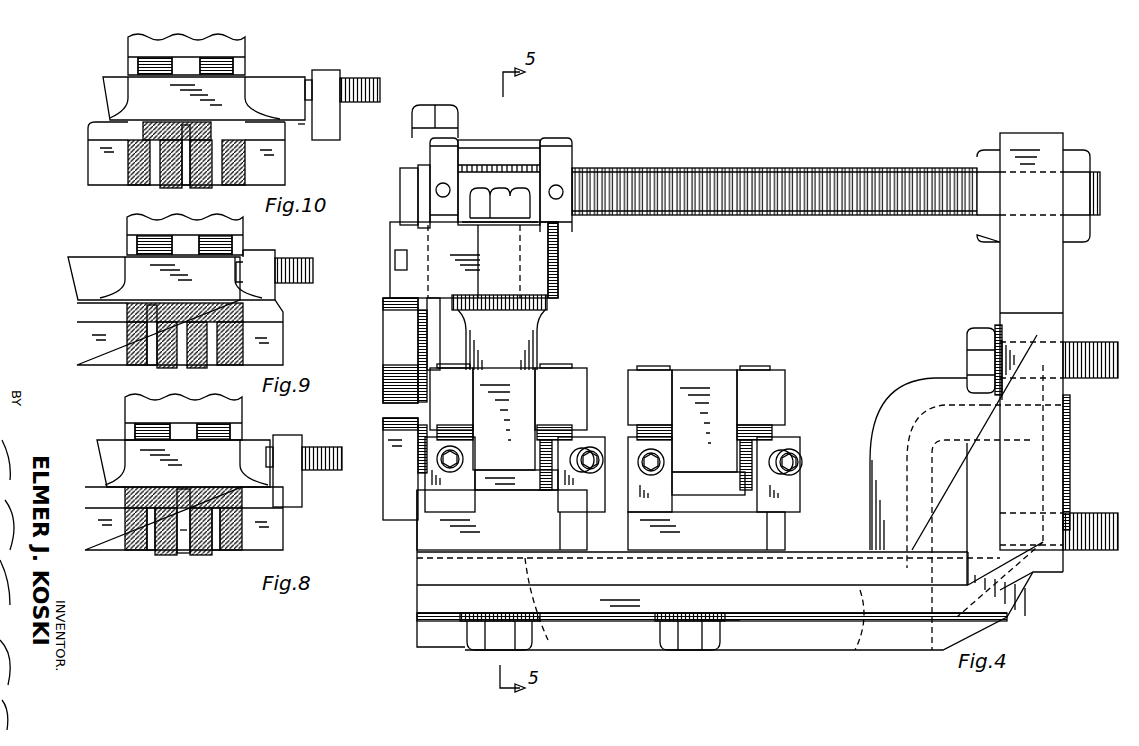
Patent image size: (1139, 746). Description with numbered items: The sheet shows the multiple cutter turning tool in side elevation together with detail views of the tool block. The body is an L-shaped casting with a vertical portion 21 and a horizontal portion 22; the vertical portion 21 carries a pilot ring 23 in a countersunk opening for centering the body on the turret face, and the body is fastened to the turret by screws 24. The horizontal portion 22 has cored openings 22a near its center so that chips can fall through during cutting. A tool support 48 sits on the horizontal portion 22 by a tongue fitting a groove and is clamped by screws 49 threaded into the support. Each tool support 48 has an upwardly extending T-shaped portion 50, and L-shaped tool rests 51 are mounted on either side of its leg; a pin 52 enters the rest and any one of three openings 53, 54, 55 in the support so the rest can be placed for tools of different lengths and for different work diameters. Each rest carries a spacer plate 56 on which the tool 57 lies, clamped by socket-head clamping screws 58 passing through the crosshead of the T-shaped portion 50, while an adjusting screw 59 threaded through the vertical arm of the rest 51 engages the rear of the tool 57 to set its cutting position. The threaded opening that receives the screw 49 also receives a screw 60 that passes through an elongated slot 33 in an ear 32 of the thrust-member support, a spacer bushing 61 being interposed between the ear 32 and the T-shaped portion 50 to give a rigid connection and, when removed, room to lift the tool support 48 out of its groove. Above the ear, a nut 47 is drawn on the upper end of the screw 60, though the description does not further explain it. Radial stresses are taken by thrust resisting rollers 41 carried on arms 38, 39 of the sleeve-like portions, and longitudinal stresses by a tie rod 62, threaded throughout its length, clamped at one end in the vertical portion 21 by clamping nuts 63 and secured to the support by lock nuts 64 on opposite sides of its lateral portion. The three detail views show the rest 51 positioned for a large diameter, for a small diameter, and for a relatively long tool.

In FIG. 4, the vertical portion 21 is at (1037, 468).
In FIG. 4, the horizontal portion 22 is at (628, 600).
In FIG. 4, the cored openings 22a is at (855, 652).
In FIG. 4, the pilot ring 23 is at (1072, 408).
In FIG. 4, the screws 24 is at (1085, 342).
In FIG. 4, the ear 32 is at (560, 262).
In FIG. 4, the elongated slot 33 is at (430, 262).
In FIG. 4, the arm 38 is at (420, 428).
In FIG. 4, the arm 39 is at (425, 330).
In FIG. 4, the thrust resisting rollers 41 is at (388, 358).
In FIG. 4, the adjusting nut 47 is at (445, 106).
In FIG. 10, the tool support 48 is at (95, 162).
In FIG. 9, the tool support 48 is at (278, 345).
In FIG. 8, the tool support 48 is at (275, 522).
In FIG. 4, the tool support 48 is at (440, 527).
In FIG. 4, the screws 49 is at (482, 650).
In FIG. 10, the T-shaped portion 50 is at (165, 42).
In FIG. 9, the T-shaped portion 50 is at (175, 228).
In FIG. 8, the T-shaped portion 50 is at (140, 405).
In FIG. 4, the T-shaped portion 50 is at (512, 382).
In FIG. 10, the L-shaped tool rest 51 is at (328, 70).
In FIG. 9, the L-shaped tool rest 51 is at (262, 252).
In FIG. 8, the L-shaped tool rest 51 is at (300, 484).
In FIG. 4, the L-shaped tool rest 51 is at (430, 492).
In FIG. 10, the pin 52 is at (220, 158).
In FIG. 9, the pin 52 is at (145, 340).
In FIG. 8, the pin 52 is at (188, 505).
In FIG. 8, the opening 53 is at (150, 552).
In FIG. 8, the opening 54 is at (183, 556).
In FIG. 8, the opening 55 is at (217, 552).
In FIG. 10, the spacer plate 56 is at (298, 126).
In FIG. 9, the spacer plate 56 is at (100, 295).
In FIG. 8, the spacer plate 56 is at (110, 480).
In FIG. 10, the tool 57 is at (278, 76).
In FIG. 9, the tool 57 is at (93, 262).
In FIG. 8, the tool 57 is at (255, 445).
In FIG. 4, the tool 57 is at (516, 480).
In FIG. 8, the clamping screws 58 is at (205, 426).
In FIG. 4, the clamping screws 58 is at (572, 368).
In FIG. 10, the adjusting screw 59 is at (365, 78).
In FIG. 9, the adjusting screw 59 is at (318, 268).
In FIG. 8, the adjusting screw 59 is at (320, 447).
In FIG. 4, the adjusting screw 59 is at (437, 460).
In FIG. 4, the screw 60 is at (505, 178).
In FIG. 4, the spacer bushing 61 is at (540, 330).
In FIG. 4, the tie rod 62 is at (842, 167).
In FIG. 4, the clamping nuts 63 is at (988, 150).
In FIG. 4, the lock nuts 64 is at (440, 153).